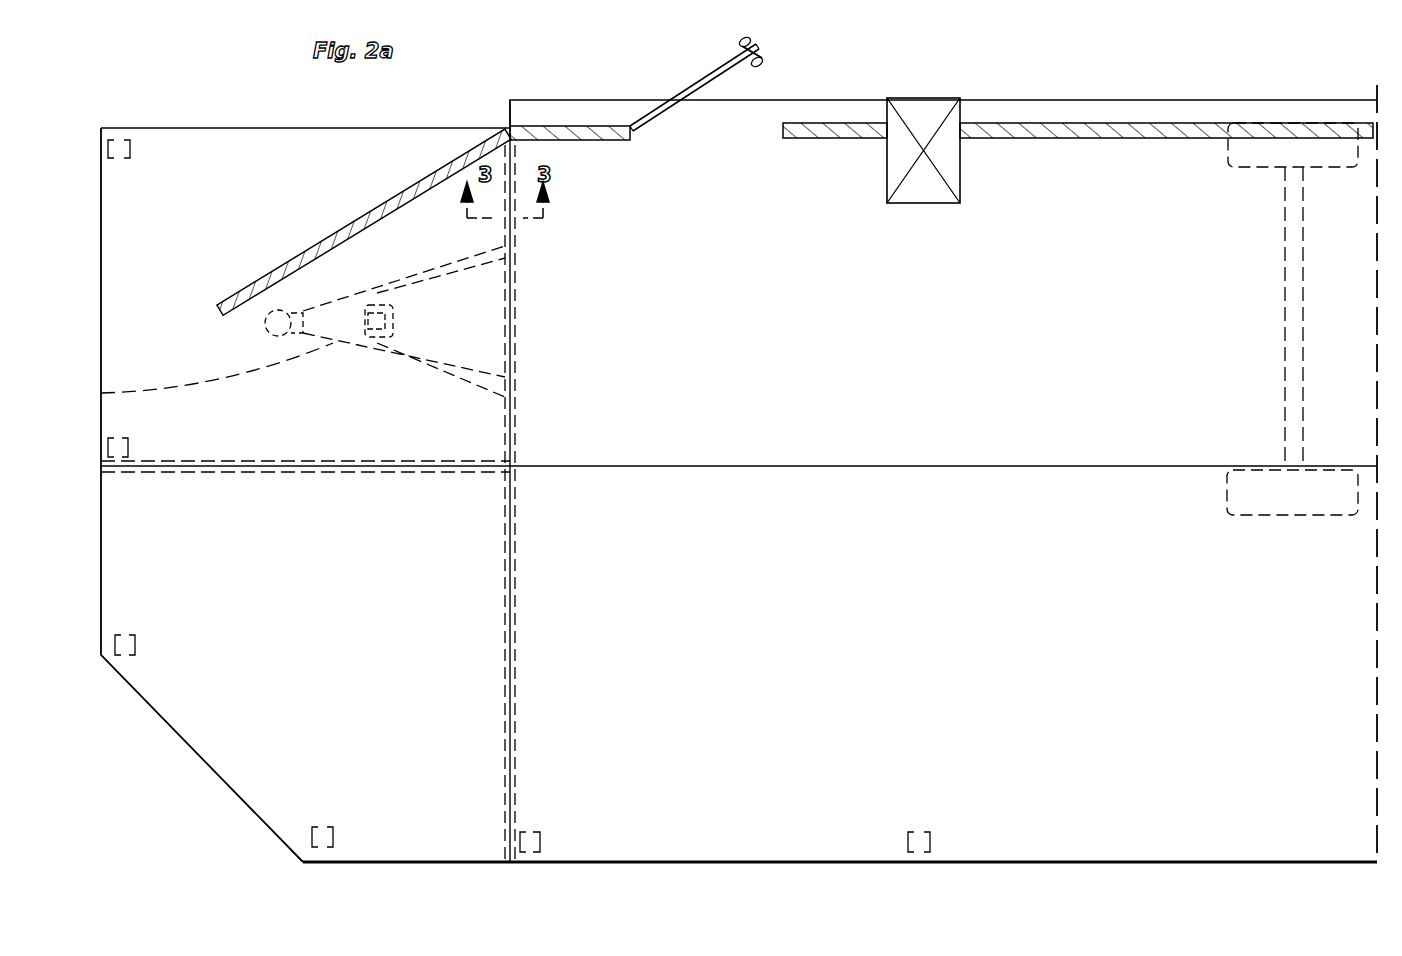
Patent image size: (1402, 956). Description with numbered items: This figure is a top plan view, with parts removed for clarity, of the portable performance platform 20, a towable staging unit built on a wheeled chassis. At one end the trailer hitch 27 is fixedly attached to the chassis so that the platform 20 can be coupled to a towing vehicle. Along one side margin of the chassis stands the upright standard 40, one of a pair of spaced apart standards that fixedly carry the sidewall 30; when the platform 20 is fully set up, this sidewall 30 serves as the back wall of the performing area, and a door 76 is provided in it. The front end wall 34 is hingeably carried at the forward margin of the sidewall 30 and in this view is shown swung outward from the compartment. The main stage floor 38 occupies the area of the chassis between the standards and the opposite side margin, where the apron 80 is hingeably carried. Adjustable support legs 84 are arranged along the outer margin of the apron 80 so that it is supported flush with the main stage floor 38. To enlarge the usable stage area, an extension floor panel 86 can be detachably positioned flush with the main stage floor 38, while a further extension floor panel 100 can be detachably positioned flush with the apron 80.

The portable performance platform 20 is at (1077, 867).
The trailer hitch 27 is at (101, 392).
The sidewall 30 is at (1122, 127).
The front end wall 34 is at (362, 213).
The main stage floor 38 is at (997, 213).
The upright standard 40 is at (918, 110).
The door 76 is at (680, 90).
The apron 80 is at (847, 805).
The adjustable support leg 84 is at (310, 837).
The extension floor panel 86 is at (195, 213).
The extension floor panel 100 is at (263, 745).